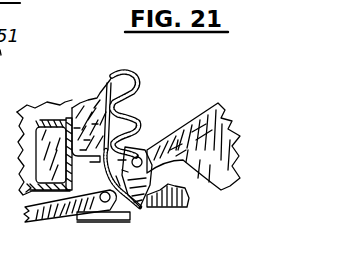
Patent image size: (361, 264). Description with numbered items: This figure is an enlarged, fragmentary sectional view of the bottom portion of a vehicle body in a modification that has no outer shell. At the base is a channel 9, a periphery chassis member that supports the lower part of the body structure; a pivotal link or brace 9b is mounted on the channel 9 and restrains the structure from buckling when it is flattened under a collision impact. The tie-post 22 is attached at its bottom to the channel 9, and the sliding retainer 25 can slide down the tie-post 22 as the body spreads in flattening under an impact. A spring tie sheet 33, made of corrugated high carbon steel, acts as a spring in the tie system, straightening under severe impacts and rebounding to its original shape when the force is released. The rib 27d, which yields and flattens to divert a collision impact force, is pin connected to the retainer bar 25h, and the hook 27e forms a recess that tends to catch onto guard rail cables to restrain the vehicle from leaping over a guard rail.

The channel 9 is at (51, 121).
The pivotal link or brace 9b is at (38, 220).
The tie-post 22 is at (82, 103).
The sliding retainer 25 is at (123, 78).
The retainer bar 25h is at (145, 207).
The rib 27d is at (193, 118).
The hook 27e is at (222, 184).
The spring tie sheet 33 is at (133, 115).